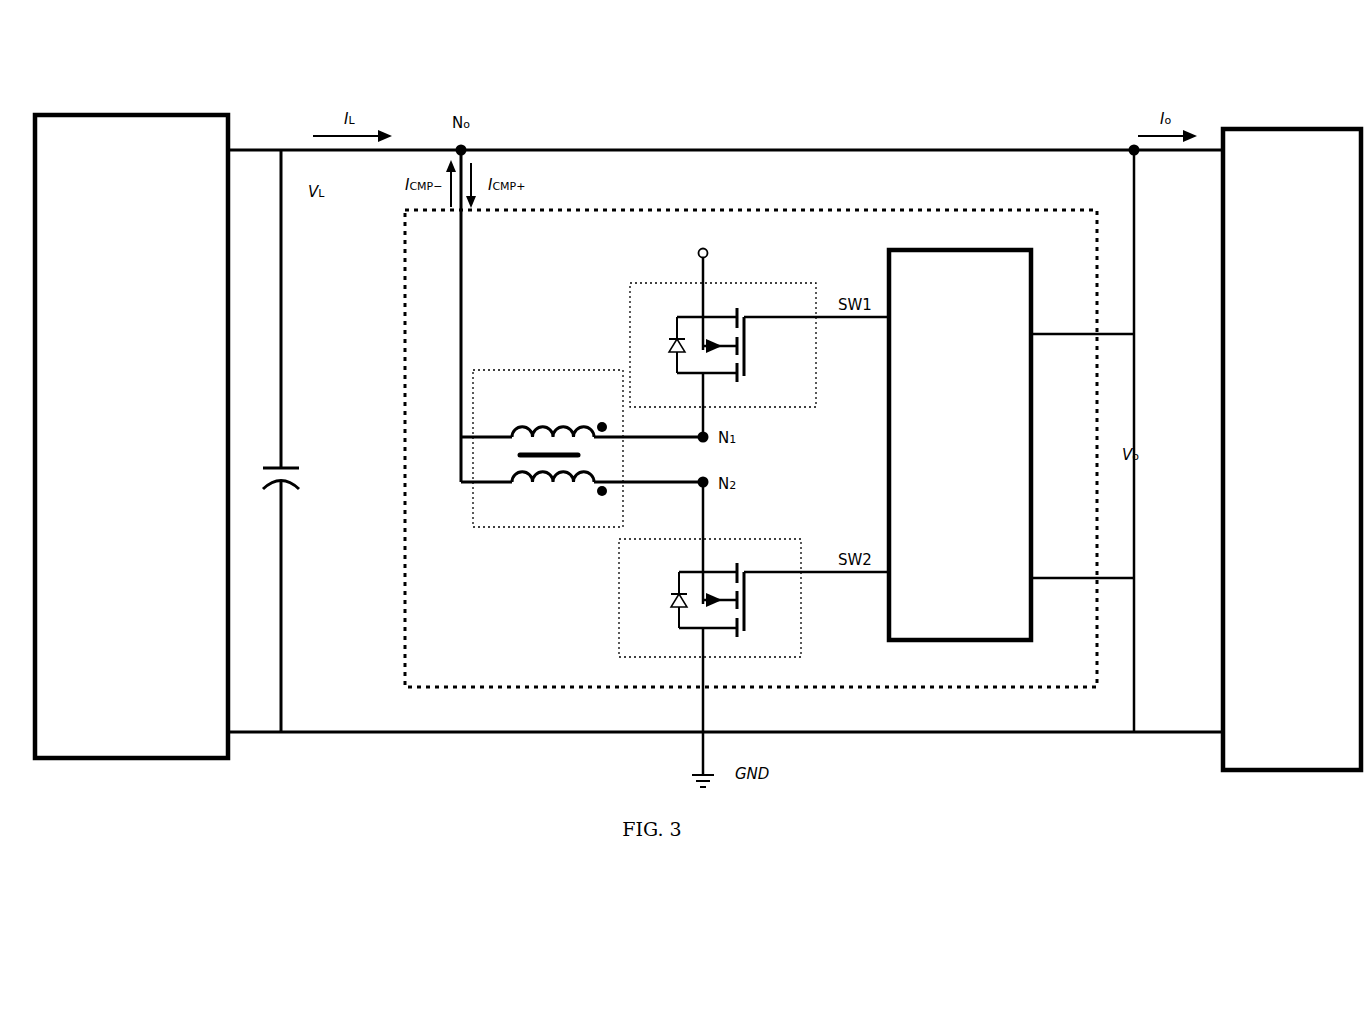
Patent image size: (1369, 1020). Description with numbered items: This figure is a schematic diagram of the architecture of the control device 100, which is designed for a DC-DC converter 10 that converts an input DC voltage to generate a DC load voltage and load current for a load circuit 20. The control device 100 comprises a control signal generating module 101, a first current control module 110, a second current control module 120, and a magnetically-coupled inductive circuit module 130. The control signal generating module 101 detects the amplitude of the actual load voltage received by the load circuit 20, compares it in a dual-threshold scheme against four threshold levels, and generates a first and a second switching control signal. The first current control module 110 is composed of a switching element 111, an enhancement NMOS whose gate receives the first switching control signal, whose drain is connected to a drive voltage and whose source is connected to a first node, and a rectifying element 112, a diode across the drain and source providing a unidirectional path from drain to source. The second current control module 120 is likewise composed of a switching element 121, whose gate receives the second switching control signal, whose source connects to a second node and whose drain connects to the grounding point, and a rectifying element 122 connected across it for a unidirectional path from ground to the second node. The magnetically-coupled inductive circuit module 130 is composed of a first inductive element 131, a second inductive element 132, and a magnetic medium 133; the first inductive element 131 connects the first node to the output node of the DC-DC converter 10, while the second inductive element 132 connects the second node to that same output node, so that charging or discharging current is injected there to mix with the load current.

The DC-DC converter 10 is at (170, 117).
The load circuit 20 is at (1292, 128).
The control device 100 is at (392, 264).
The control signal generating module 101 is at (1033, 318).
The first current control module 110 is at (759, 315).
The switching element 111 is at (750, 350).
The rectifying element 112 is at (662, 346).
The second current control module 120 is at (754, 579).
The switching element 121 is at (750, 606).
The rectifying element 122 is at (662, 603).
The magnetically-coupled inductive circuit module 130 is at (541, 463).
The first inductive element 131 is at (545, 421).
The second inductive element 132 is at (547, 494).
The magnetic medium 133 is at (513, 456).